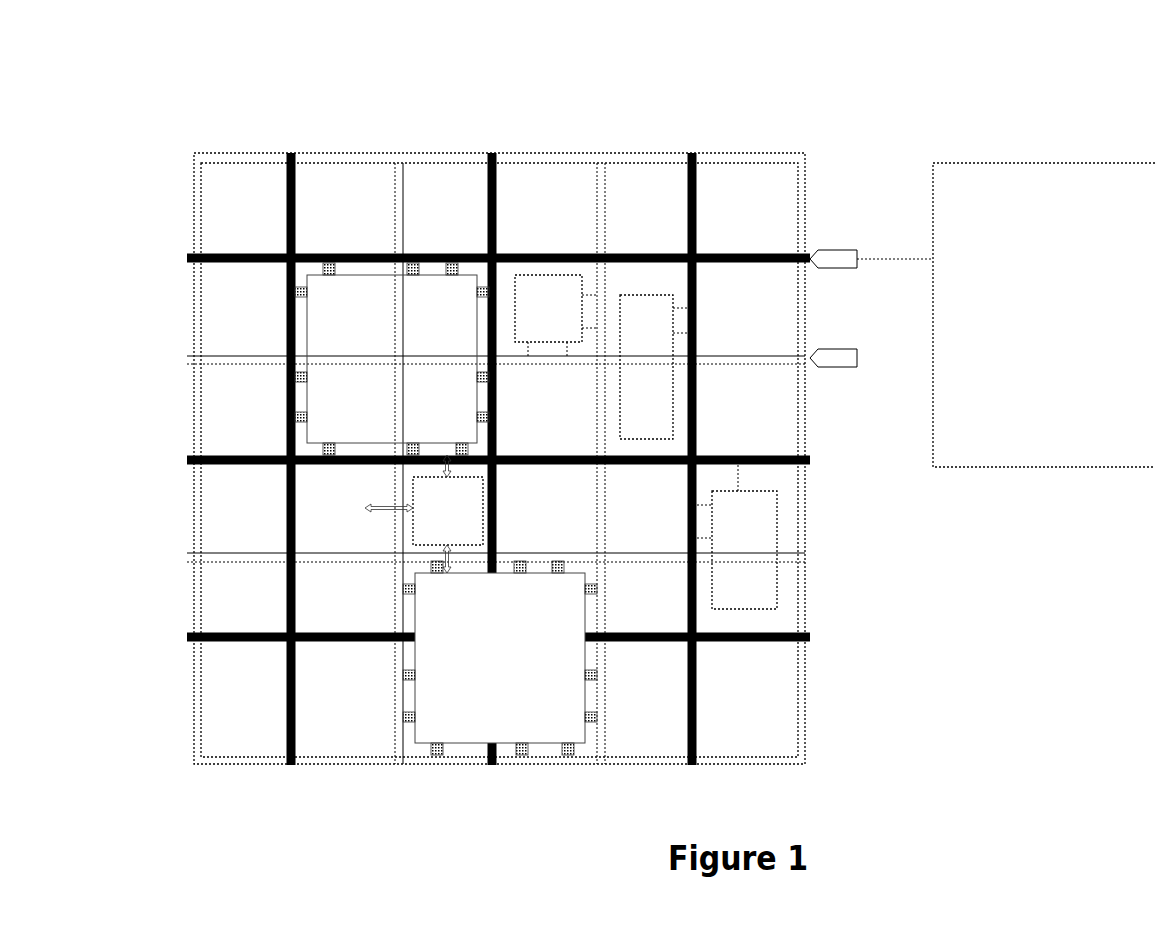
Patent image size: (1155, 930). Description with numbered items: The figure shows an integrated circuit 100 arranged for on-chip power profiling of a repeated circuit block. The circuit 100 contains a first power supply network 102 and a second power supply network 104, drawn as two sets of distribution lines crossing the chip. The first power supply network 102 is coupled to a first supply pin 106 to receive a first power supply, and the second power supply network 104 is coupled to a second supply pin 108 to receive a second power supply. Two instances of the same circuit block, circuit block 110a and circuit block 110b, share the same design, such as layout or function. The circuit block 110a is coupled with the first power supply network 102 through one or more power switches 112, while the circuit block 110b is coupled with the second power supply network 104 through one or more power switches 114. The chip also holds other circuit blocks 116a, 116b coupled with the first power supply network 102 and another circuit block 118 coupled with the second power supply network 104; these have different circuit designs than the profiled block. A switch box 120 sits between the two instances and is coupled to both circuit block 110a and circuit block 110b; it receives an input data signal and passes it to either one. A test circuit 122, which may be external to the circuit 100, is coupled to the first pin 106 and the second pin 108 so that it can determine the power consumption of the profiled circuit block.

The integrated circuit 100 is at (207, 78).
The first power supply network 102 is at (295, 203).
The second power supply network 104 is at (398, 217).
The first supply pin 106 is at (830, 255).
The second supply pin 108 is at (843, 362).
The circuit block 110a is at (392, 359).
The circuit block 110b is at (500, 658).
The power switches 112 is at (300, 298).
The power switches 114 is at (405, 680).
The other circuit block 116a is at (654, 367).
The other circuit block 116b is at (737, 537).
The other circuit block 118 is at (556, 315).
The switch box 120 is at (424, 514).
The test circuit 122 is at (1044, 315).